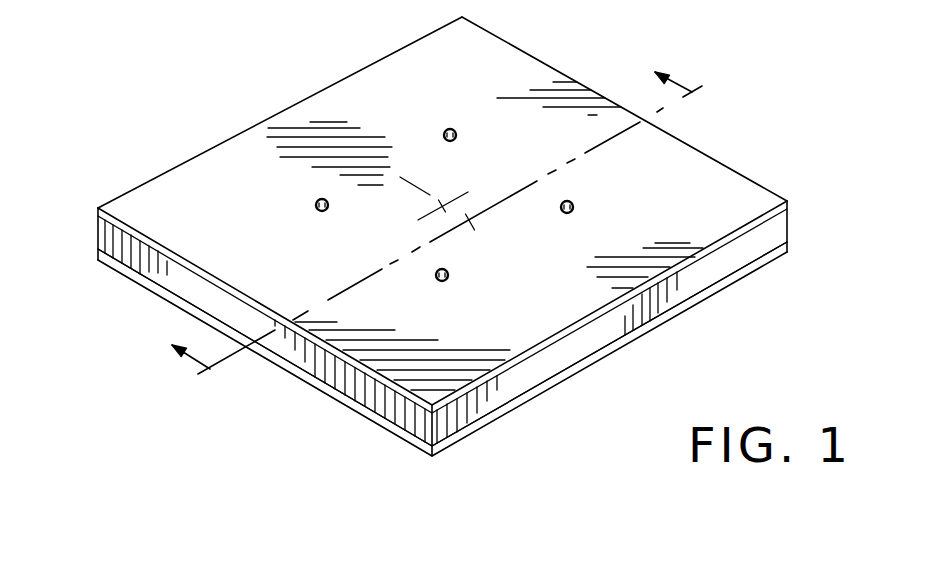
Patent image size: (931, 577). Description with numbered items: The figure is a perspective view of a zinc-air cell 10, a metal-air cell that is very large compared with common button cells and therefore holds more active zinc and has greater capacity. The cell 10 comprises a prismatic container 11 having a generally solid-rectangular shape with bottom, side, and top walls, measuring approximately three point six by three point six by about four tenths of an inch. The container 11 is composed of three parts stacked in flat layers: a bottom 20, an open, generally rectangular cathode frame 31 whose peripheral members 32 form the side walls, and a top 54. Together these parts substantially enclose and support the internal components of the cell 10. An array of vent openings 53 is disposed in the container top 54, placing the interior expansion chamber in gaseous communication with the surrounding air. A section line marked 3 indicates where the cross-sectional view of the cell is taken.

The zinc-air cell 10 is at (145, 135).
The prismatic container 11 is at (152, 178).
The bottom 20 is at (432, 456).
The cathode frame 31 is at (788, 232).
The peripheral members 32 is at (725, 267).
The vent openings 53 is at (450, 128).
The top 54 is at (733, 178).
The section line 3- 3 is at (448, 235).